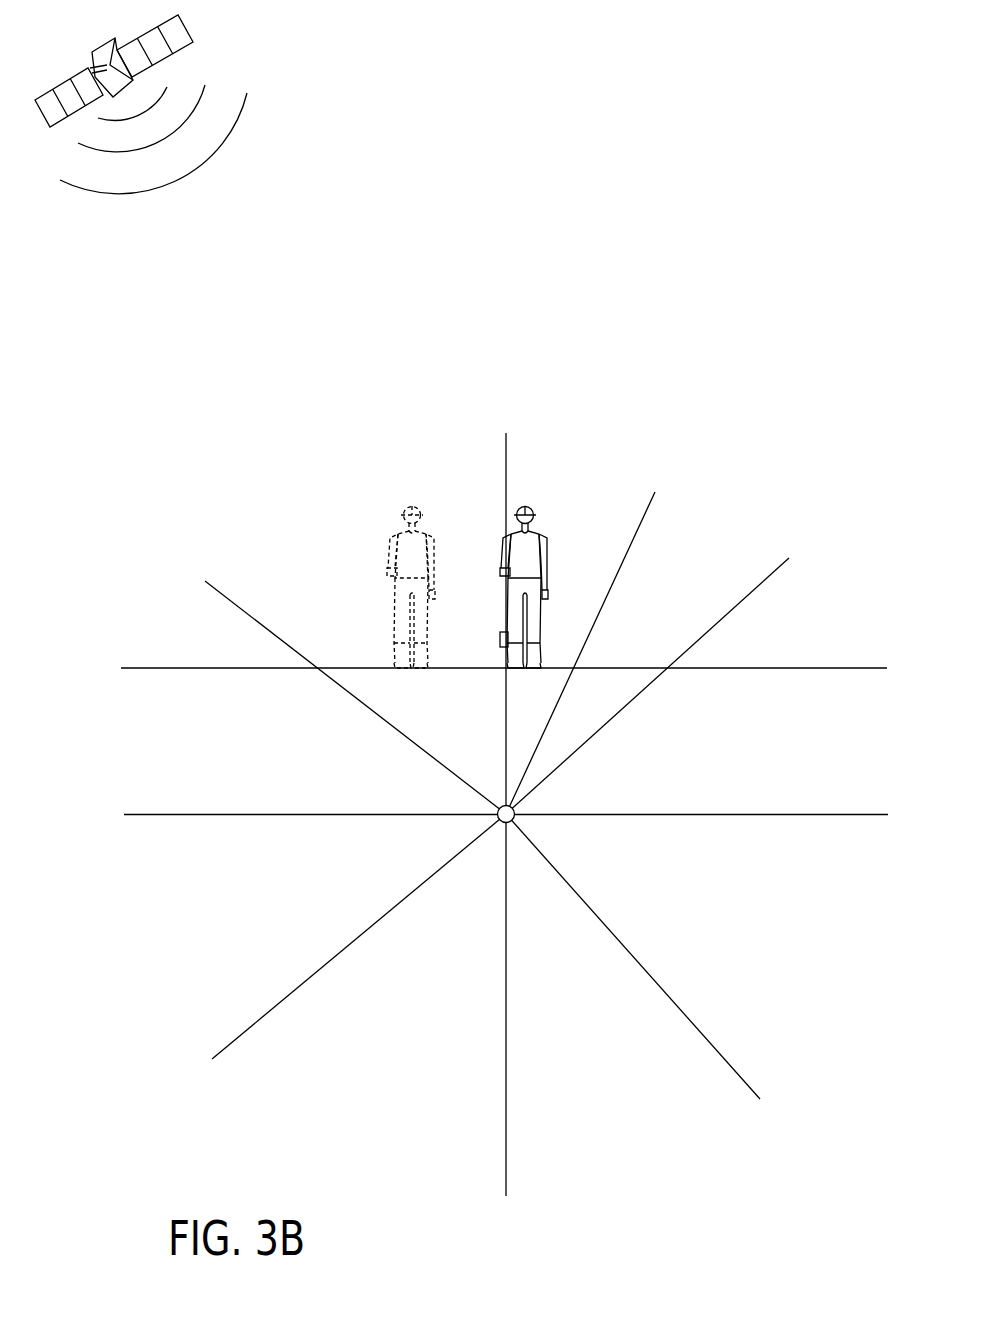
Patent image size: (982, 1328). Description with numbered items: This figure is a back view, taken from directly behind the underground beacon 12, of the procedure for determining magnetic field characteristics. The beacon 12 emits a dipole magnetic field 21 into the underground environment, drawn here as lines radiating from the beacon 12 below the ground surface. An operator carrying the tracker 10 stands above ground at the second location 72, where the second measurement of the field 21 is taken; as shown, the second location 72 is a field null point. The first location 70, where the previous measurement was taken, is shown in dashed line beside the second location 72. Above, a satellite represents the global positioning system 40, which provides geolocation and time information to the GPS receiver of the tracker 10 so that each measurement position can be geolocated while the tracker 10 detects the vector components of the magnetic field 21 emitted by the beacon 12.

The tracker 10 is at (503, 635).
The beacon 12 is at (655, 492).
The dipole magnetic field 21 is at (759, 584).
The global positioning system 40 is at (192, 32).
The first location 70 is at (385, 503).
The second location 72 is at (548, 488).